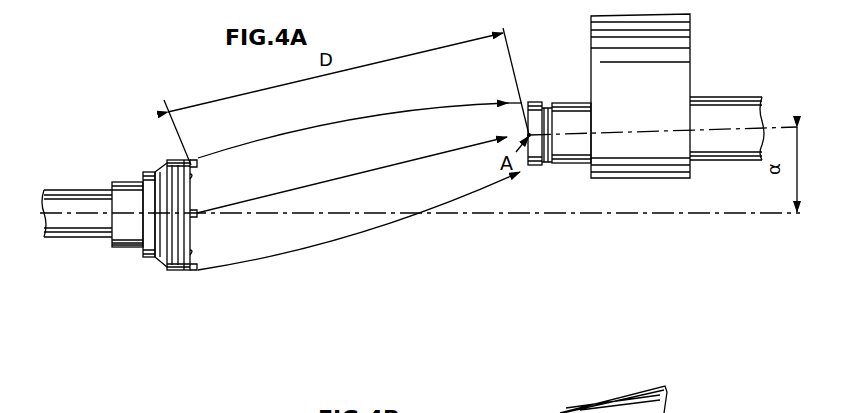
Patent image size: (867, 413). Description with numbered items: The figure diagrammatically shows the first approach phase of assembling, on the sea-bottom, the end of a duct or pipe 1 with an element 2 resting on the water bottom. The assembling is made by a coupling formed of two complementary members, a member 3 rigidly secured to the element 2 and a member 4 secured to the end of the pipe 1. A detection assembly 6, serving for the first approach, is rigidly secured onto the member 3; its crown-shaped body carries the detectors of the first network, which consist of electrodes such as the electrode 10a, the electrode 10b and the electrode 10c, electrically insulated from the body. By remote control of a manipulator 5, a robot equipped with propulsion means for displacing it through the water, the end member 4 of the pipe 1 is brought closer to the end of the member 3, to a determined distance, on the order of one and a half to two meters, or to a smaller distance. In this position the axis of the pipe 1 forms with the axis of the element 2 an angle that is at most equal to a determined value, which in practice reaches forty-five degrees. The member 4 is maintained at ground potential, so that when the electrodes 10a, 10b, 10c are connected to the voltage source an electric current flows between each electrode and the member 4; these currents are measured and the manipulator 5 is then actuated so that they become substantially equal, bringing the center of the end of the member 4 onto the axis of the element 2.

The pipe 1 is at (733, 160).
The element resting on the water bottom 2 is at (63, 237).
The connector member 3 is at (116, 247).
The connector member 4 is at (570, 163).
The manipulator 5 is at (636, 178).
The detection assembly 6 is at (140, 142).
The electrode 10a is at (198, 158).
The electrode 10b is at (197, 213).
The electrode 10c is at (198, 270).